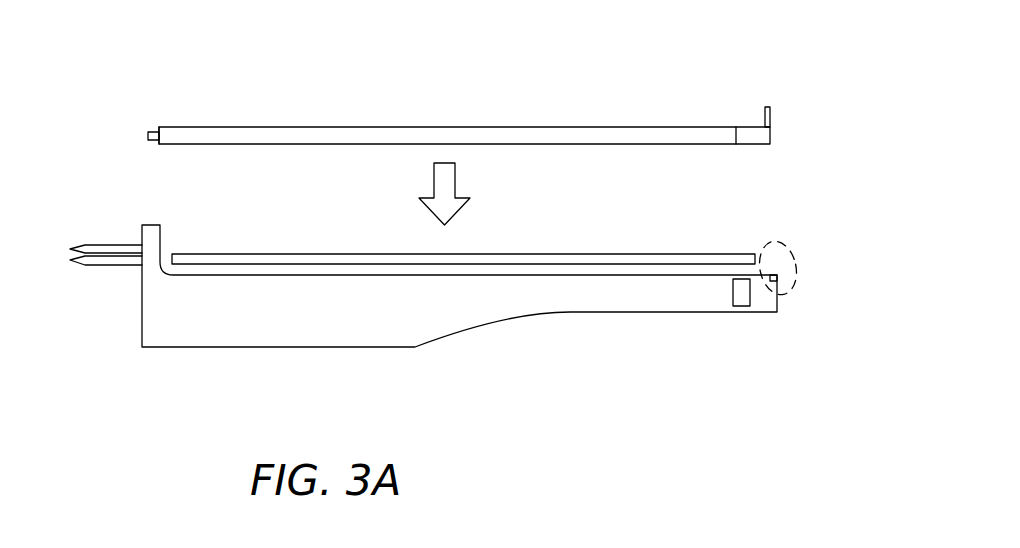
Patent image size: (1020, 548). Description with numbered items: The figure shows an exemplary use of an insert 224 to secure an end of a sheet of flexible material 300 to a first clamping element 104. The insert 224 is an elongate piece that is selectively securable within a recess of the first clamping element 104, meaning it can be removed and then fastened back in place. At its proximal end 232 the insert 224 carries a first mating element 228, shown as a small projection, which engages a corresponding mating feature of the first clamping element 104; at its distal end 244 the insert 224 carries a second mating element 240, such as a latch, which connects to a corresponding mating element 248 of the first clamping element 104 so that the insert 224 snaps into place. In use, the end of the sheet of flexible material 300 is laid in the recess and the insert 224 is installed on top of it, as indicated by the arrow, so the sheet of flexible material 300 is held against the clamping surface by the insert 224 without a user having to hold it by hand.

The first clamping element 104 is at (563, 297).
The insert 224 is at (333, 135).
The first mating element 228 is at (147, 131).
The proximal end 232 is at (153, 125).
The second mating element 240 is at (765, 110).
The distal end 244 is at (775, 133).
The corresponding mating element 248 is at (775, 288).
The sheet of flexible material 300 is at (606, 262).